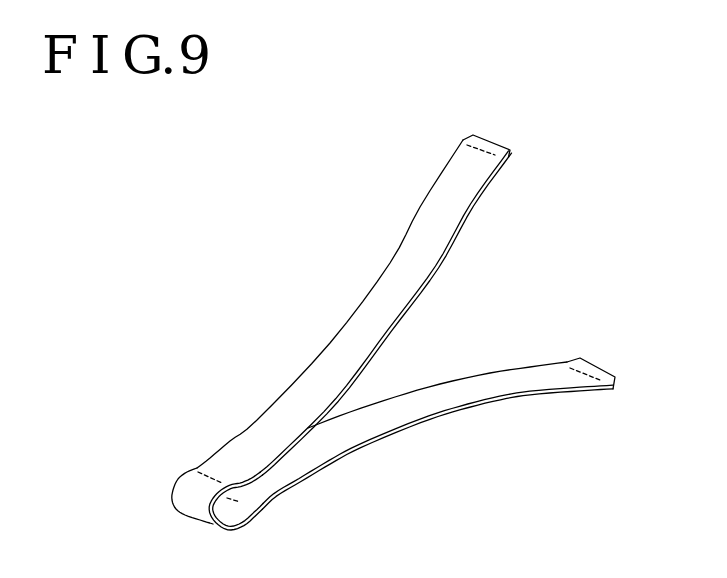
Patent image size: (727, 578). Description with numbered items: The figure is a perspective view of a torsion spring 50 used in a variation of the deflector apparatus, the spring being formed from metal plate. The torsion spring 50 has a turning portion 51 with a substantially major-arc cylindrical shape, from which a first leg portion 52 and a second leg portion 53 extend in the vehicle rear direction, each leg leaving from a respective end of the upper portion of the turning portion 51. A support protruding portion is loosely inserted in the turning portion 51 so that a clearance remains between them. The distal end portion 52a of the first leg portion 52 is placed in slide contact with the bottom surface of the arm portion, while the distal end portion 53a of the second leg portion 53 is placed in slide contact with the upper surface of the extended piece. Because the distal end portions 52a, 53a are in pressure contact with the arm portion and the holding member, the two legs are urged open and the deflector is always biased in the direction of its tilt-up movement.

The torsion spring 50 is at (243, 228).
The turning portion 51 is at (177, 489).
The first leg portion 52 is at (390, 272).
The distal end portion of the first leg portion 52a is at (488, 138).
The second leg portion 53 is at (388, 440).
The distal end portion of the second leg portion 53a is at (610, 392).